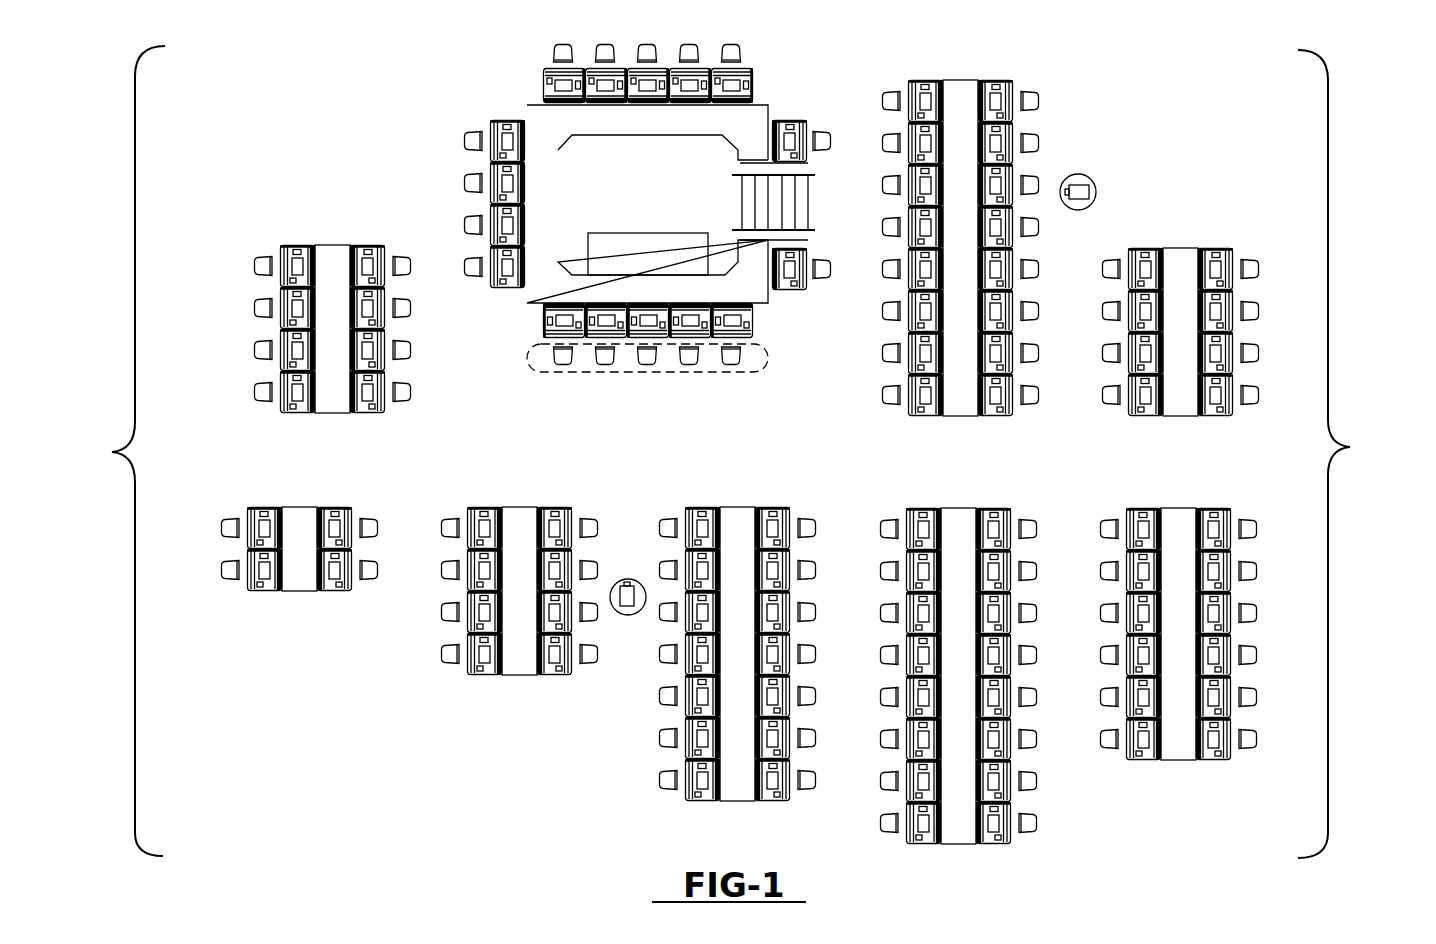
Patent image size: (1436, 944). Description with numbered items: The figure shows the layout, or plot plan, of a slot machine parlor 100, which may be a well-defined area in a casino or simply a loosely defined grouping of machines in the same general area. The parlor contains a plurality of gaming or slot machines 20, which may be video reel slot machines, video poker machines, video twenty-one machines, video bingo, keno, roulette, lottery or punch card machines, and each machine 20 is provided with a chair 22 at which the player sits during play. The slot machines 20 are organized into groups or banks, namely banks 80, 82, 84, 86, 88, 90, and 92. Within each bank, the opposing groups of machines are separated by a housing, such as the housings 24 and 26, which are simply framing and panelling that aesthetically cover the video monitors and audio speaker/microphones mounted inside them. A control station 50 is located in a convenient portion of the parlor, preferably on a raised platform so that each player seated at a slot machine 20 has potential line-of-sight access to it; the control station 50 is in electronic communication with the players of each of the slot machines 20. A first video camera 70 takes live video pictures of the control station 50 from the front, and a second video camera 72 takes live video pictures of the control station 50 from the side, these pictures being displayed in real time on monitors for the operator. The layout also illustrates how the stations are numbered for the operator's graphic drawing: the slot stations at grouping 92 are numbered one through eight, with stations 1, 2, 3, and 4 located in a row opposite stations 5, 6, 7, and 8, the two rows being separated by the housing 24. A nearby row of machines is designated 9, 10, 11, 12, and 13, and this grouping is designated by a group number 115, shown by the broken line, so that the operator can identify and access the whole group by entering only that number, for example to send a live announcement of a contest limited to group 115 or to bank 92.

The slot station 1 is at (270, 262).
The slot station 2 is at (265, 313).
The slot station 3 is at (262, 346).
The slot station 4 is at (265, 392).
The slot station 5 is at (405, 262).
The slot station 6 is at (410, 306).
The slot station 7 is at (408, 351).
The slot station 8 is at (406, 393).
The slot station 9 is at (557, 368).
The slot station 10 is at (600, 368).
The slot station 11 is at (646, 368).
The slot station 12 is at (690, 368).
The slot station 13 is at (733, 368).
The slot machine 20 is at (325, 521).
The chair 22 is at (233, 518).
The housing 24 is at (340, 262).
The housing 26 is at (298, 521).
The control station 50 is at (676, 195).
The first video camera 70 is at (632, 613).
The second video camera 72 is at (1087, 180).
The bank of slot machines 80 is at (518, 685).
The bank of slot machines 82 is at (734, 810).
The bank of slot machines 84 is at (956, 854).
The bank of slot machines 86 is at (1167, 773).
The bank of slot machines 88 is at (1190, 240).
The bank of slot machines 90 is at (964, 72).
The bank of slot machines 92 is at (326, 295).
The slot machine parlor 100 is at (1352, 237).
The group number 115 is at (770, 360).